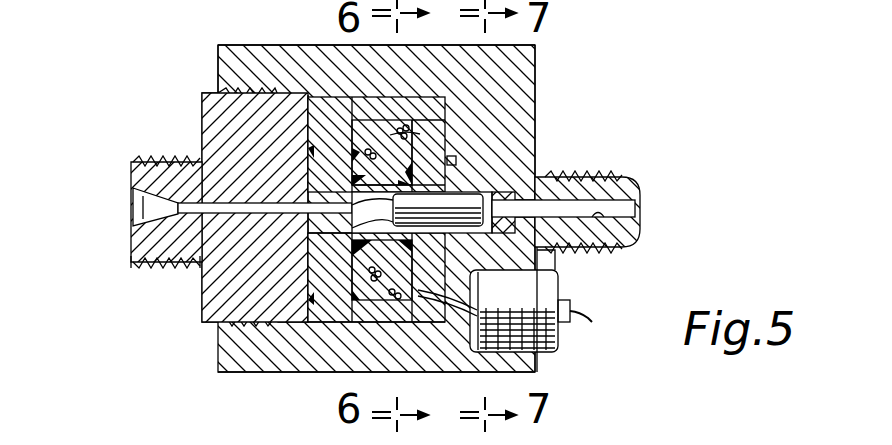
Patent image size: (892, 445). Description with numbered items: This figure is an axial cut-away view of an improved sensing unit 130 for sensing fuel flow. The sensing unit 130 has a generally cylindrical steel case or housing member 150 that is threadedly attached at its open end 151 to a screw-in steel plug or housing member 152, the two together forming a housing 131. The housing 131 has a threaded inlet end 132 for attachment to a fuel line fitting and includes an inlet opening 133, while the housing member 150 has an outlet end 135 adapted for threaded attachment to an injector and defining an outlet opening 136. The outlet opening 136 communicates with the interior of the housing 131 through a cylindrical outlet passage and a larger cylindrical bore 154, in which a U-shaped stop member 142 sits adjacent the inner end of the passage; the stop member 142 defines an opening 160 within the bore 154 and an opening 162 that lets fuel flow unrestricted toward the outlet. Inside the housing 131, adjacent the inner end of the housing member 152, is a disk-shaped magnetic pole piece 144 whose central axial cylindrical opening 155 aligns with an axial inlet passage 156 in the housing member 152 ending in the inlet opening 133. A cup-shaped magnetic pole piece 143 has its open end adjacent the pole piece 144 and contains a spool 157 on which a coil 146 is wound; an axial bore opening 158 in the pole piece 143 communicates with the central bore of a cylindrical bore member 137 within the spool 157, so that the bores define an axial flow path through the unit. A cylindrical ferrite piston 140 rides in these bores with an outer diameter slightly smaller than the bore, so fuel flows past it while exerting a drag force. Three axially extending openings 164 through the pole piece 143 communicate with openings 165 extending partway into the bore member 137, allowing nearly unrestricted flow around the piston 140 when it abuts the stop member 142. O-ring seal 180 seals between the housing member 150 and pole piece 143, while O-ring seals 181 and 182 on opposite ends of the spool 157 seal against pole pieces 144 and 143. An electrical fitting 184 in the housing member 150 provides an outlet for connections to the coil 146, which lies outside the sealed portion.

The sensing unit 130 is at (553, 90).
The housing 131 is at (236, 42).
The inlet end 132 is at (148, 250).
The inlet opening 133 is at (132, 202).
The outlet end 135 is at (626, 182).
The outlet opening 136 is at (632, 208).
The bore member 137 is at (380, 160).
The piston 140 is at (352, 198).
The stop member 142 is at (490, 193).
The magnetic pole piece 143 is at (425, 118).
The magnetic pole piece 144 is at (322, 103).
The coil 146 is at (318, 350).
The housing member 150 is at (545, 125).
The open end 151 is at (217, 60).
The housing member 152 is at (215, 120).
The cylindrical bore 154 is at (538, 258).
The central axial cylindrical opening 155 is at (218, 295).
The inlet passage 156 is at (190, 215).
The spool 157 is at (417, 133).
The axial bore opening 158 is at (457, 161).
The opening 160 is at (159, 441).
The opening 162 is at (545, 170).
The axially extending openings 164 is at (488, 321).
The axially extending openings 165 is at (352, 250).
The O-ring seal 180 is at (443, 150).
The O-ring seal 181 is at (337, 144).
The O-ring seal 182 is at (432, 318).
The electrical fitting 184 is at (545, 290).